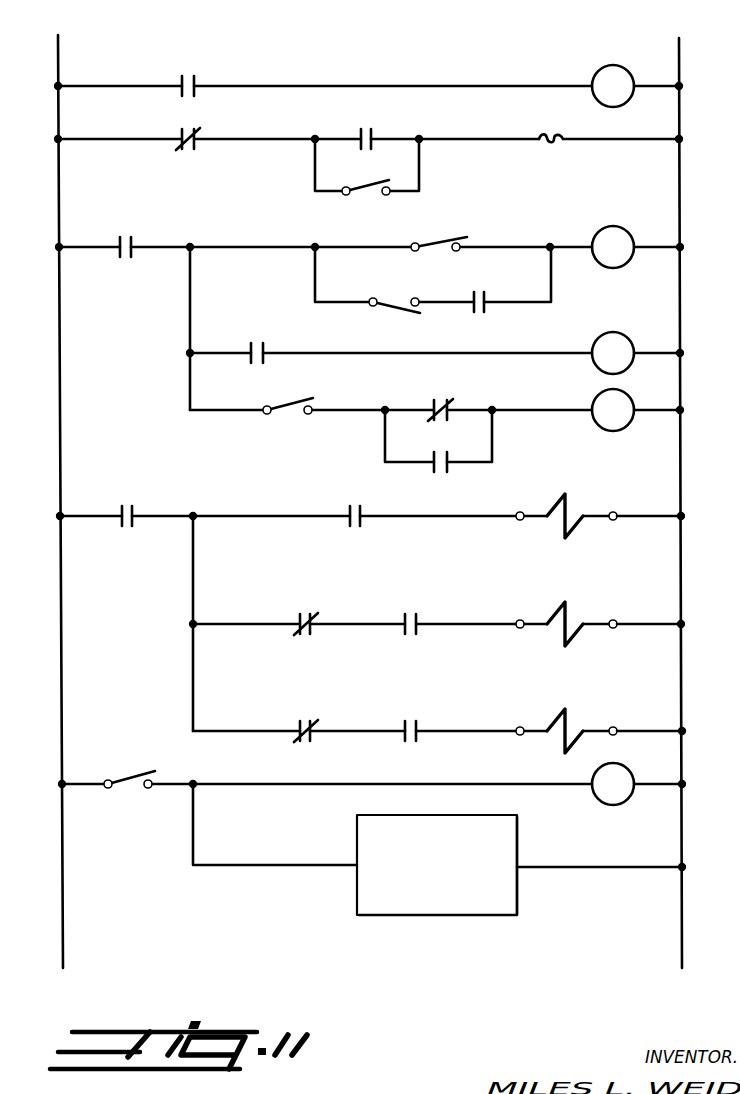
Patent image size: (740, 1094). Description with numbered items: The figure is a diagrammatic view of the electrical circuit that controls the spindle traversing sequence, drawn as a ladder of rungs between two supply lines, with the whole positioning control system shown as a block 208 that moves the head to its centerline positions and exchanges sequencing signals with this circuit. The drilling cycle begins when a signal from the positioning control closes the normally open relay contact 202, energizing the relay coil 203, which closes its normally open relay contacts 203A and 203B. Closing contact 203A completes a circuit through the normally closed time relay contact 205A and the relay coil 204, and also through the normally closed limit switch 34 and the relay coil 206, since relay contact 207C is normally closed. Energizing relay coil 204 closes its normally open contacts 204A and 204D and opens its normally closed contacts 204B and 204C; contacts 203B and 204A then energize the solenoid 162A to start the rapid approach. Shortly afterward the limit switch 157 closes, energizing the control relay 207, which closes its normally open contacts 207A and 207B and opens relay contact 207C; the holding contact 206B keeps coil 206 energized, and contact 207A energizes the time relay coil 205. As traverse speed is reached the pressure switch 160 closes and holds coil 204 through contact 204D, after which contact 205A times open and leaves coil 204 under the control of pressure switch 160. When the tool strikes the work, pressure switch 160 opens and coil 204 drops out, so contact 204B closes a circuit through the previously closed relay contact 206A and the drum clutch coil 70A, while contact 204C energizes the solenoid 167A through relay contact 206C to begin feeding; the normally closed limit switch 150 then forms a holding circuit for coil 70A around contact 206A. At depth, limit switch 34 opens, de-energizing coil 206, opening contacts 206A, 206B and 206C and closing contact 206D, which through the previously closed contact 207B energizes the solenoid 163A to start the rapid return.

The normally open relay contact 202 is at (190, 80).
The relay coil 203 is at (626, 67).
The normally closed contact 204B is at (198, 134).
The relay contact 206A is at (377, 134).
The drum clutch coil 70A is at (553, 133).
The limit switch 150 is at (365, 196).
The normally open relay contact 203A is at (135, 242).
The normally closed time relay contact 205A is at (440, 241).
The relay coil 204 is at (626, 228).
The pressure switch 160 is at (402, 312).
The normally open contact 204D is at (486, 306).
The normally open contact 207A is at (266, 348).
The time relay coil 205 is at (628, 338).
The limit switch 34 is at (283, 404).
The relay contact 207C is at (440, 404).
The relay coil 206 is at (628, 395).
The holding contact 206B is at (432, 468).
The normally open relay contact 203B is at (136, 512).
The normally open contact 204A is at (348, 512).
The solenoid 162A is at (568, 506).
The normally closed contact 204C is at (298, 620).
The relay contact 206C is at (420, 620).
The solenoid 167A is at (568, 612).
The contact 206D is at (298, 728).
The normally open contact 207B is at (403, 728).
The solenoid 163A is at (568, 720).
The limit switch 157 is at (124, 778).
The control relay 207 is at (650, 746).
The positioning control system 208 is at (520, 912).